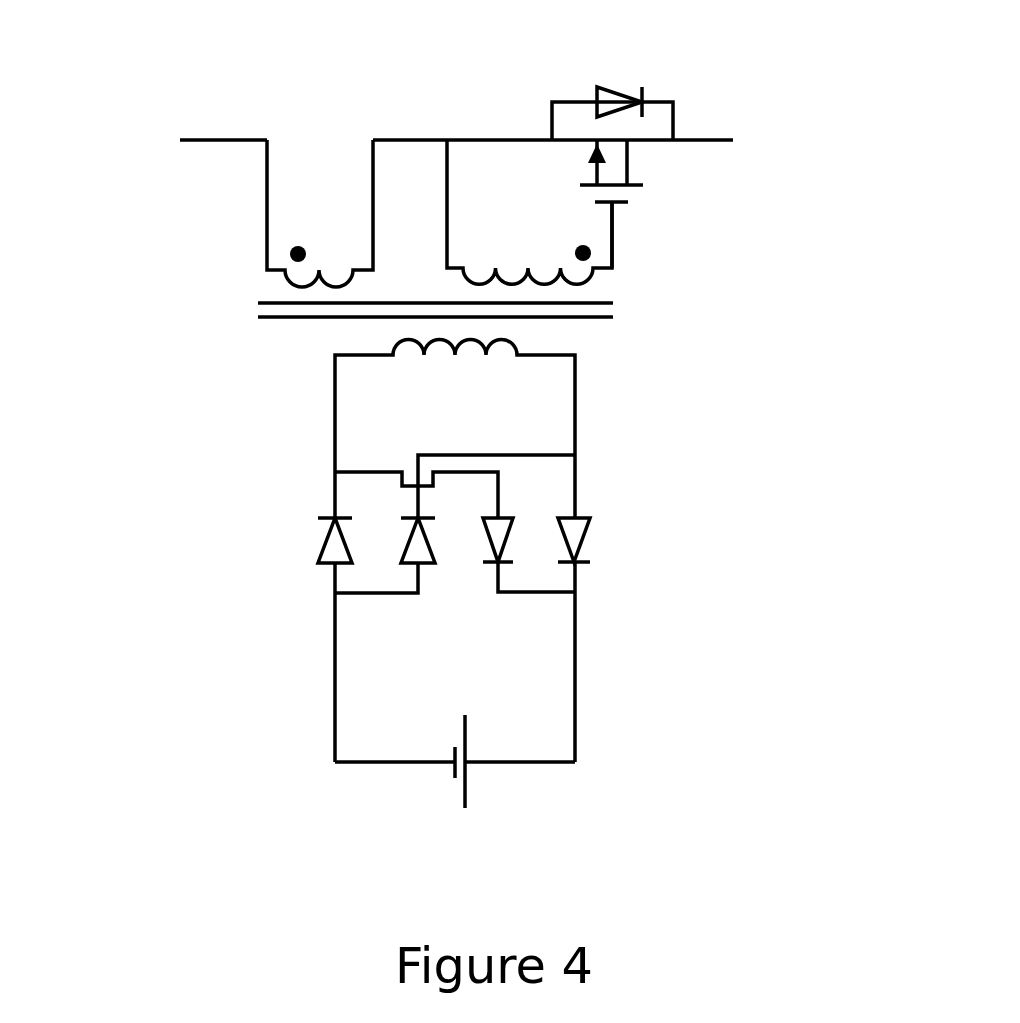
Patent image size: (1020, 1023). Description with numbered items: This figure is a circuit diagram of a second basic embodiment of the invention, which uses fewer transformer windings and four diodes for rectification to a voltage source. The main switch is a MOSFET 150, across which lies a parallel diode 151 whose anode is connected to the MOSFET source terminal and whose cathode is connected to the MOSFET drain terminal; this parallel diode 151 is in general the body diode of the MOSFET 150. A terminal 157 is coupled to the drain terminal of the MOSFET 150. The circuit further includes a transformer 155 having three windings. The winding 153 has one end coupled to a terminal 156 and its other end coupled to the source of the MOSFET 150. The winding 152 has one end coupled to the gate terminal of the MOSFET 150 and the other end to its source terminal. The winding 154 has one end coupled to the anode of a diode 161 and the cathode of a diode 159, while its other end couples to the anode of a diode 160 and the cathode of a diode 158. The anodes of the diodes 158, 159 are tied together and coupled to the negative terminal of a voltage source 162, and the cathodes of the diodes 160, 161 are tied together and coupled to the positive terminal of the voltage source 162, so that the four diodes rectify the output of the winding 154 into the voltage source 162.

The MOSFET 150 is at (657, 163).
The parallel diode 151 is at (600, 72).
The winding 152 is at (518, 263).
The winding 153 is at (345, 262).
The winding 154 is at (497, 358).
The transformer 155 is at (242, 318).
The terminal 156 is at (180, 142).
The terminal 157 is at (728, 117).
The diode 158 is at (318, 532).
The diode 159 is at (420, 562).
The diode 160 is at (500, 575).
The diode 161 is at (598, 530).
The voltage source 162 is at (453, 778).